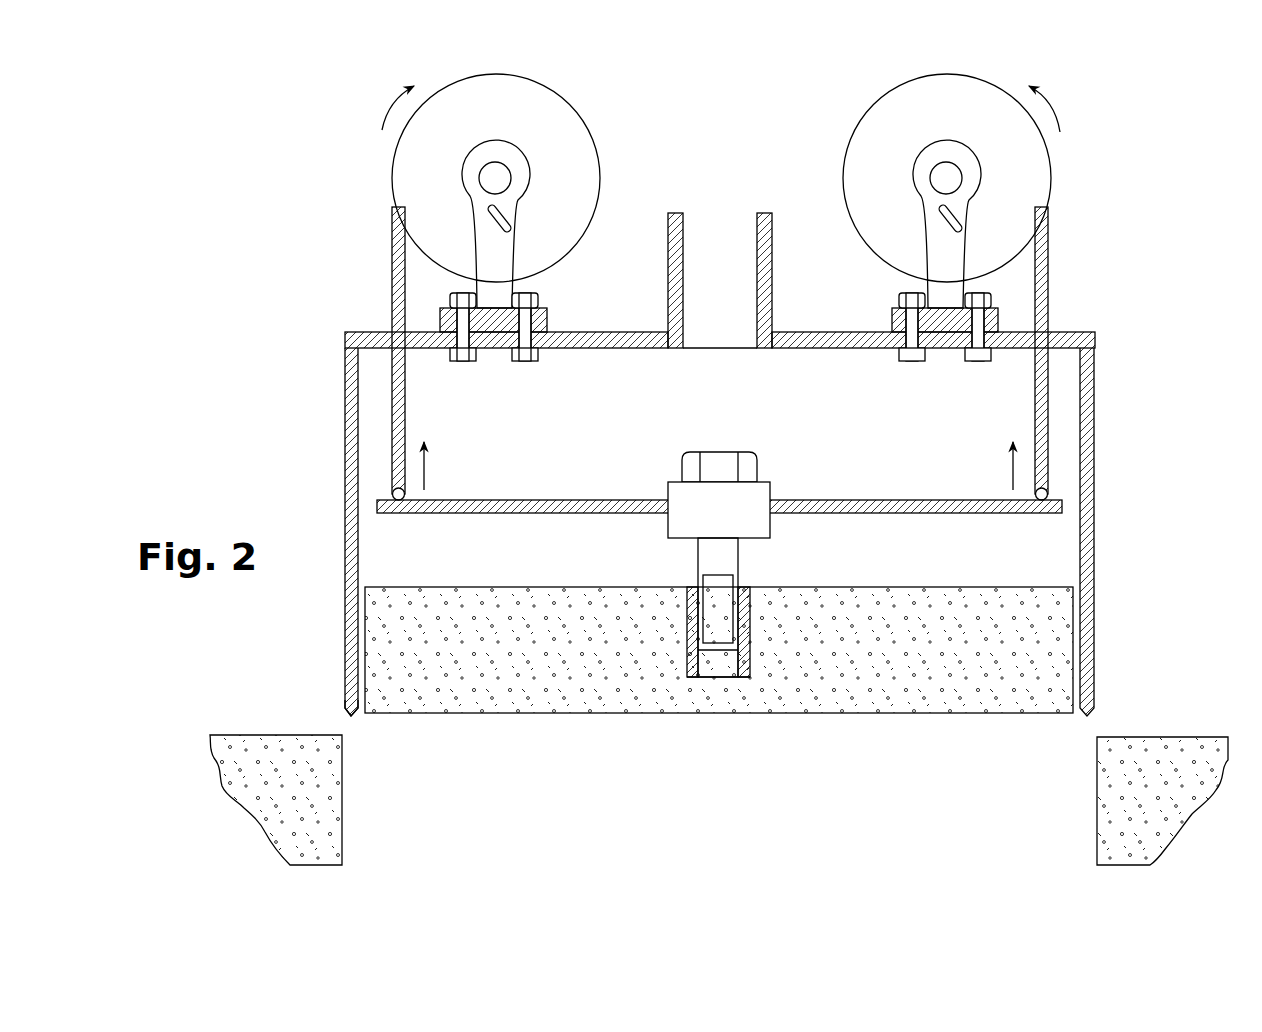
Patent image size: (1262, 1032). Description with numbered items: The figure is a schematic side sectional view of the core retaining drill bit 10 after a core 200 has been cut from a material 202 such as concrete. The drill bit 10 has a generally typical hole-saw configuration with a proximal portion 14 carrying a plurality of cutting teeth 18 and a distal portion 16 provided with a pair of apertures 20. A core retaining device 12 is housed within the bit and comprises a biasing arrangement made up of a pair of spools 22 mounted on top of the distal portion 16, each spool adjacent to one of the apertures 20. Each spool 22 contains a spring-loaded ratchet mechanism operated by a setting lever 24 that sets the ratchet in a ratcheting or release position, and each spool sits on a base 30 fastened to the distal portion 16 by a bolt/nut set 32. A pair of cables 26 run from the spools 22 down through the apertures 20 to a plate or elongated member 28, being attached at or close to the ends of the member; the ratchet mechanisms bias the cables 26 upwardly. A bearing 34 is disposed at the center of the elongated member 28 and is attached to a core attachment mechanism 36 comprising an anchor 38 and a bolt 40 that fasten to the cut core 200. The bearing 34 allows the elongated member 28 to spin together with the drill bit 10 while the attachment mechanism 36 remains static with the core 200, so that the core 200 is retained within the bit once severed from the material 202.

The core retaining drill bit 10 is at (1132, 187).
The core retaining device 12 is at (380, 474).
The proximal portion 14 is at (1112, 674).
The distal portion 16 is at (1079, 326).
The cutting teeth 18 is at (351, 708).
The apertures 20 is at (1053, 324).
The spools 22 is at (576, 107).
The setting lever 24 is at (512, 204).
The cables 26 is at (407, 397).
The elongated member 28 is at (585, 499).
The base 30 is at (891, 318).
The bolt/nut set 32 is at (903, 376).
The bearing 34 is at (741, 431).
The core attachment mechanism 36 is at (668, 574).
The anchor 38 is at (754, 646).
The bolt 40 is at (724, 602).
The core 200 is at (862, 667).
The material 202 is at (1150, 765).